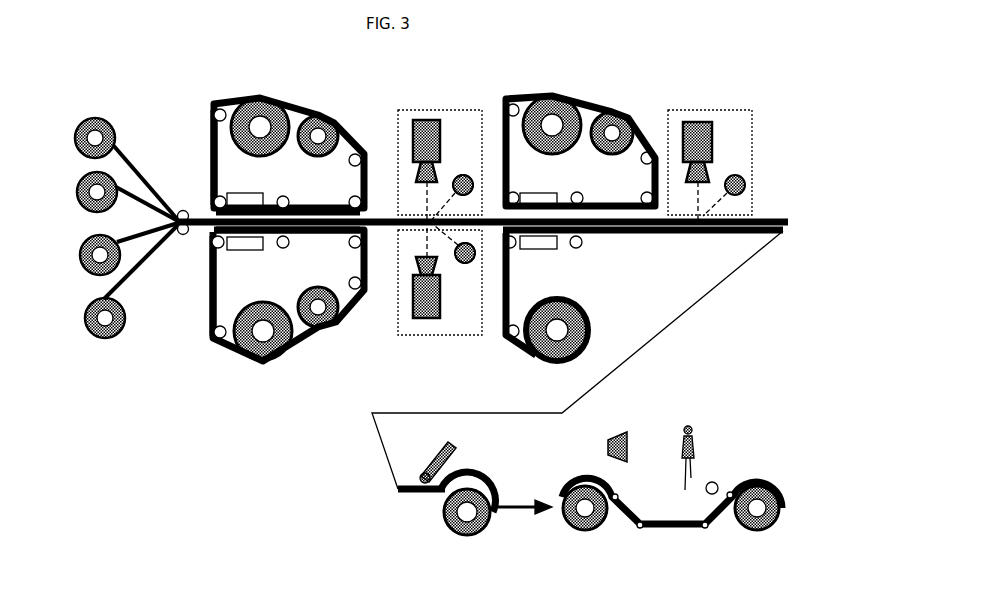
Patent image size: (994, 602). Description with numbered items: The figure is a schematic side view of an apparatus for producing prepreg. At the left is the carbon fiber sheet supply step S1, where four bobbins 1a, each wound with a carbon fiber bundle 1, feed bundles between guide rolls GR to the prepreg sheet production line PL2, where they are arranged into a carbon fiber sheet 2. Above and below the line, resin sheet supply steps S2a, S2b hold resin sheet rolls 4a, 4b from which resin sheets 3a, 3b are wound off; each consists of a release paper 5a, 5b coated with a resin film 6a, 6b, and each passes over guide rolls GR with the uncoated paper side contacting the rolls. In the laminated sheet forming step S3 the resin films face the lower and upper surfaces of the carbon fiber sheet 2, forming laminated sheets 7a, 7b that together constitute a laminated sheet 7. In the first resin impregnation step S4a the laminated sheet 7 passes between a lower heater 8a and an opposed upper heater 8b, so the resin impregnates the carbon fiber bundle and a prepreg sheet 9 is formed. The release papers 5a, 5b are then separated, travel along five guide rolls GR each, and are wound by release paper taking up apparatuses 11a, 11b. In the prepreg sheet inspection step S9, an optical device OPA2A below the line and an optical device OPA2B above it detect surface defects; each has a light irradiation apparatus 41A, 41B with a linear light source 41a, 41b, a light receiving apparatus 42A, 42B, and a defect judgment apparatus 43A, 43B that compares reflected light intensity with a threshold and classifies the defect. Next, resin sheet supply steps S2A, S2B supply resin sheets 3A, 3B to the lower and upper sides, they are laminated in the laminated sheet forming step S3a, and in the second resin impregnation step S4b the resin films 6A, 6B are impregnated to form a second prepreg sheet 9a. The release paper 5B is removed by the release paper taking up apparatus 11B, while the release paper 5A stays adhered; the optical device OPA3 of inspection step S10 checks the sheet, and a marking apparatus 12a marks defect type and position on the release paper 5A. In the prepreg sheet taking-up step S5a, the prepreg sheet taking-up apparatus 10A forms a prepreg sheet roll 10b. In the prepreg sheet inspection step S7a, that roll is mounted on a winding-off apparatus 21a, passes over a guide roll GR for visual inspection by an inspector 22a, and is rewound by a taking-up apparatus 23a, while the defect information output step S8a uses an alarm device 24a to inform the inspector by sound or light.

The bobbin 1a is at (93, 120).
The carbon fiber bundle 1 is at (123, 282).
The carbon fiber sheet 2 is at (177, 234).
The resin sheet 3a is at (260, 362).
The resin sheet 3b is at (255, 99).
The resin sheet 3A is at (588, 328).
The resin sheet 3B is at (562, 98).
The resin sheet roll 4a is at (285, 352).
The resin sheet roll 4b is at (265, 118).
The release paper 5a is at (215, 302).
The release paper 5b is at (212, 145).
The release paper 5A is at (667, 233).
The release paper 5B is at (632, 114).
The resin film 6a is at (210, 324).
The resin film 6b is at (222, 157).
The resin film 6A is at (505, 262).
The resin film 6B is at (503, 185).
The laminated sheet 7 is at (206, 235).
The laminated sheet 7a is at (200, 234).
The laminated sheet 7b is at (213, 213).
The heater 8a is at (265, 251).
The heater 8b is at (257, 193).
The prepreg sheet 9 is at (482, 240).
The second prepreg sheet 9a is at (638, 223).
The prepreg sheet taking-up apparatus 10A is at (441, 519).
The prepreg sheet roll 10b is at (473, 489).
The release paper taking up apparatus 11a is at (317, 330).
The release paper taking up apparatus 11b is at (316, 113).
The release paper taking up apparatus 11B is at (613, 110).
The marking apparatus 12a is at (421, 475).
The winding-off apparatus 21a is at (562, 523).
The inspector 22a is at (697, 442).
The taking-up apparatus 23a is at (753, 485).
The alarm device 24a is at (608, 442).
The light source 41a is at (440, 235).
The light irradiation apparatus 41A is at (432, 235).
The light source 41b is at (494, 123).
The light irradiation apparatus 41B is at (488, 137).
The light receiving apparatus 42A is at (430, 318).
The light receiving apparatus 42B is at (431, 149).
The defect judgment apparatus 43A is at (436, 318).
The defect judgment apparatus 43B is at (442, 120).
The guide roll GR is at (216, 110).
The carbon fiber sheet supply step S1 is at (176, 212).
The resin sheet supply step S2a is at (232, 355).
The resin sheet supply step S2b is at (228, 103).
The resin sheet supply step S2A is at (560, 277).
The resin sheet supply step S2B is at (535, 97).
The laminated sheet forming step S3 is at (180, 238).
The laminated sheet forming step S3a is at (510, 196).
The first resin impregnation step S4a is at (327, 231).
The second resin impregnation step S4b is at (620, 222).
The prepreg sheet taking-up step S5a is at (439, 508).
The prepreg sheet inspection step S7a is at (590, 482).
The defect information output step S8a is at (626, 445).
The prepreg sheet inspection step S9 is at (489, 375).
The prepreg sheet inspection step S10 is at (796, 195).
The optical device OPA2A is at (405, 318).
The optical device OPA2B is at (423, 110).
The optical device OPA3 is at (728, 122).
The prepreg sheet production line PL2 is at (387, 222).